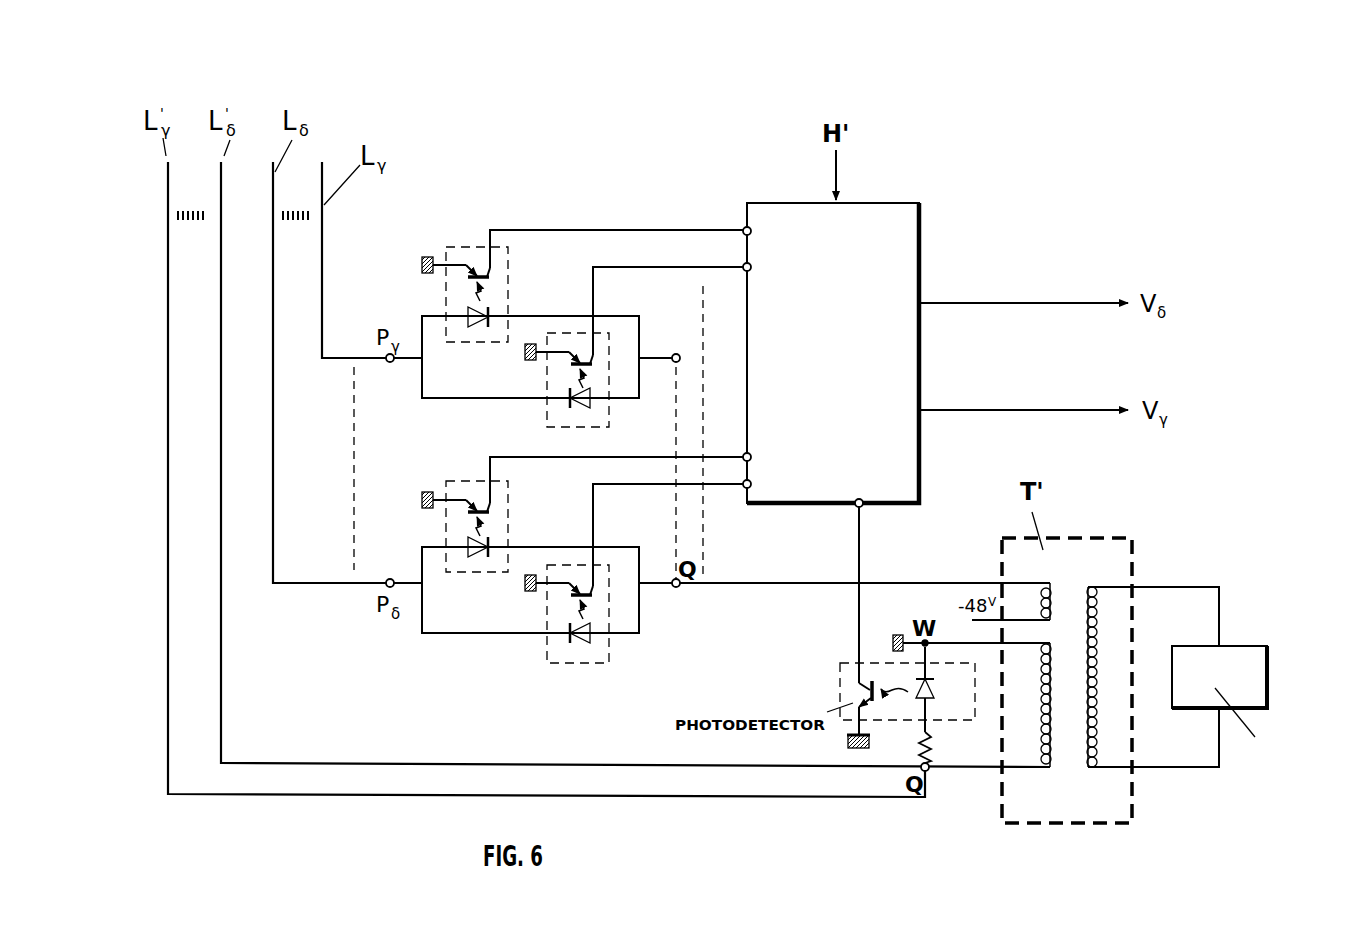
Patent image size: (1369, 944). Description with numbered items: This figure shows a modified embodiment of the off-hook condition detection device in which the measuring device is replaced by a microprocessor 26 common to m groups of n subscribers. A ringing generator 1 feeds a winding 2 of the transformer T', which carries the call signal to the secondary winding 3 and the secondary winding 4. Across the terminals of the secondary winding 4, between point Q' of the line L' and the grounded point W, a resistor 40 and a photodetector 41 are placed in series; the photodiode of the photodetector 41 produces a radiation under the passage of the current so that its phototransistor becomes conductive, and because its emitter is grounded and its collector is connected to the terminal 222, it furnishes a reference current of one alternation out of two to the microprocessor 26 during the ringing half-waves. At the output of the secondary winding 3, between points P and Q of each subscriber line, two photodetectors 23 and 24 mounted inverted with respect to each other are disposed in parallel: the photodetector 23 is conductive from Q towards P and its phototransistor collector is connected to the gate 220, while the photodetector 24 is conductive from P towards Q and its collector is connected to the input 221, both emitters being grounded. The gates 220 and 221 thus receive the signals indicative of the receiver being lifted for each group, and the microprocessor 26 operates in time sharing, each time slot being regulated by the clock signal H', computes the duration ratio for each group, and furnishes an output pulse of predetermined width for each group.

The ringing generator 1 is at (1238, 655).
The transformer winding 2 is at (1093, 697).
The secondary winding 3 is at (1060, 600).
The secondary winding 4 is at (1040, 725).
The photodetector 23 is at (636, 486).
The photodetector 24 is at (584, 368).
The microprocessor 26 is at (900, 250).
The resistor 40 is at (932, 755).
The photodetector 41 is at (838, 688).
The gate 220 is at (727, 389).
The input 221 is at (727, 331).
The terminal 222 is at (845, 591).